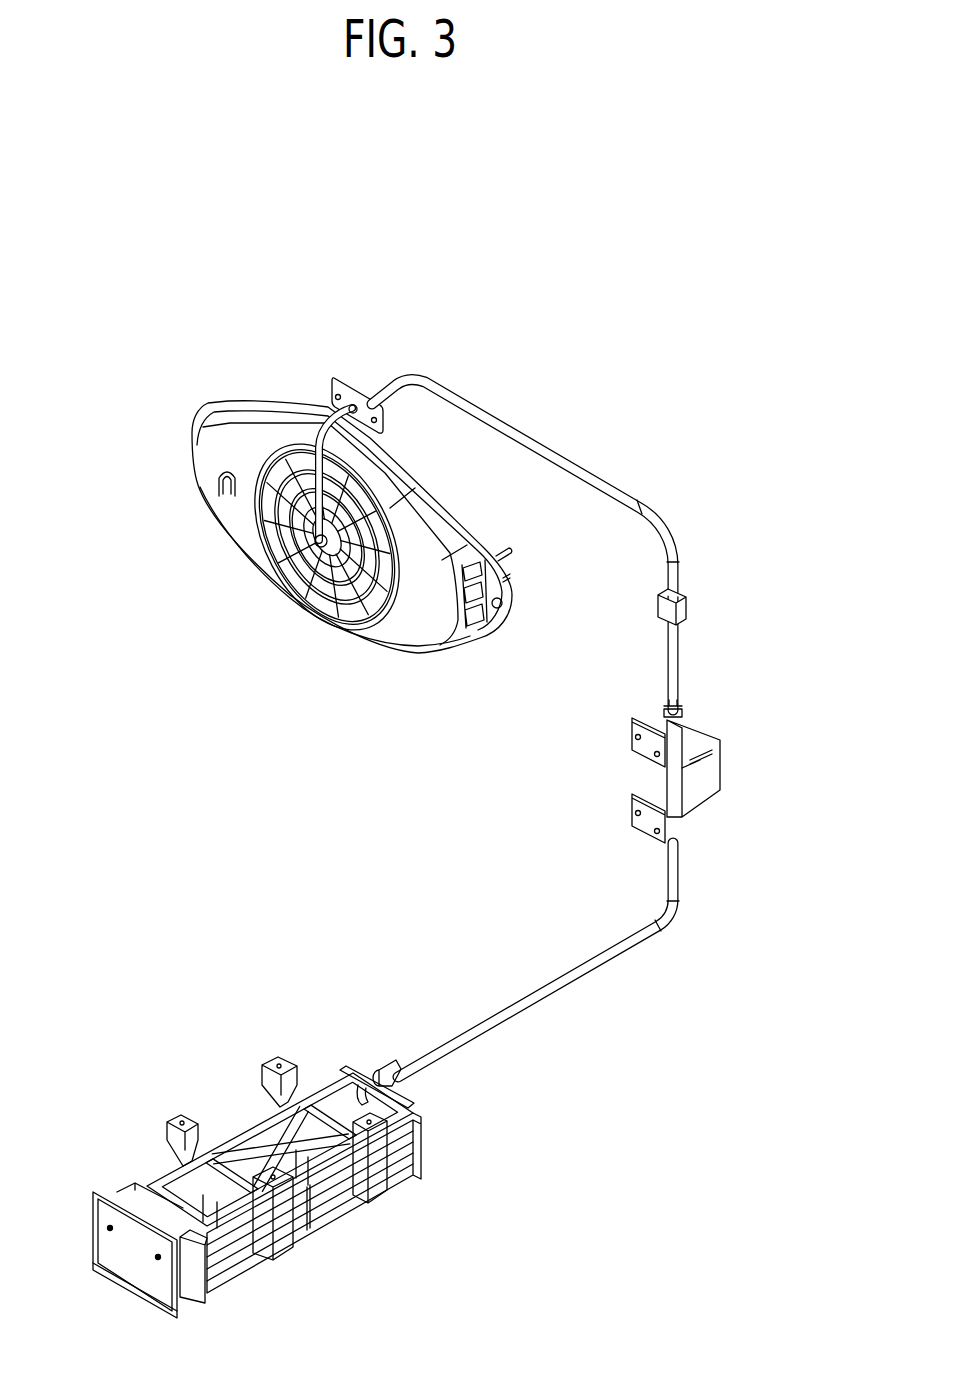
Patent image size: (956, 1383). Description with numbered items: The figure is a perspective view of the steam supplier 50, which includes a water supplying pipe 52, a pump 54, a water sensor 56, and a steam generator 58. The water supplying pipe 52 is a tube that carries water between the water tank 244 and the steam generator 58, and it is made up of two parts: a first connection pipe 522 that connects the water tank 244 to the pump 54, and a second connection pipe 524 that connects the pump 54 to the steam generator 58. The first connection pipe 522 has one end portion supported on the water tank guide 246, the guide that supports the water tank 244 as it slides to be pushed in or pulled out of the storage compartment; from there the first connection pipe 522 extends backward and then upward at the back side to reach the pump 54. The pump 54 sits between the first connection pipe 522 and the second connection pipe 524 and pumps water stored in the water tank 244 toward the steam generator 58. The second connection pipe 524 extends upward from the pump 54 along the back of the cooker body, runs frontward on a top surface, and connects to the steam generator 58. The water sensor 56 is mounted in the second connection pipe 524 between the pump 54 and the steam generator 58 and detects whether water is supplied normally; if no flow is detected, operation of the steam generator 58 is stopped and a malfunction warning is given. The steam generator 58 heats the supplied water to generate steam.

The steam supplier 50 is at (571, 744).
The water supplying pipe 52 is at (509, 744).
The first connection pipe 522 is at (509, 975).
The second connection pipe 524 is at (665, 687).
The pump 54 is at (722, 776).
The water sensor 56 is at (688, 613).
The steam generator 58 is at (316, 626).
The water tank 244 is at (133, 1275).
The water tank guide 246 is at (182, 1163).